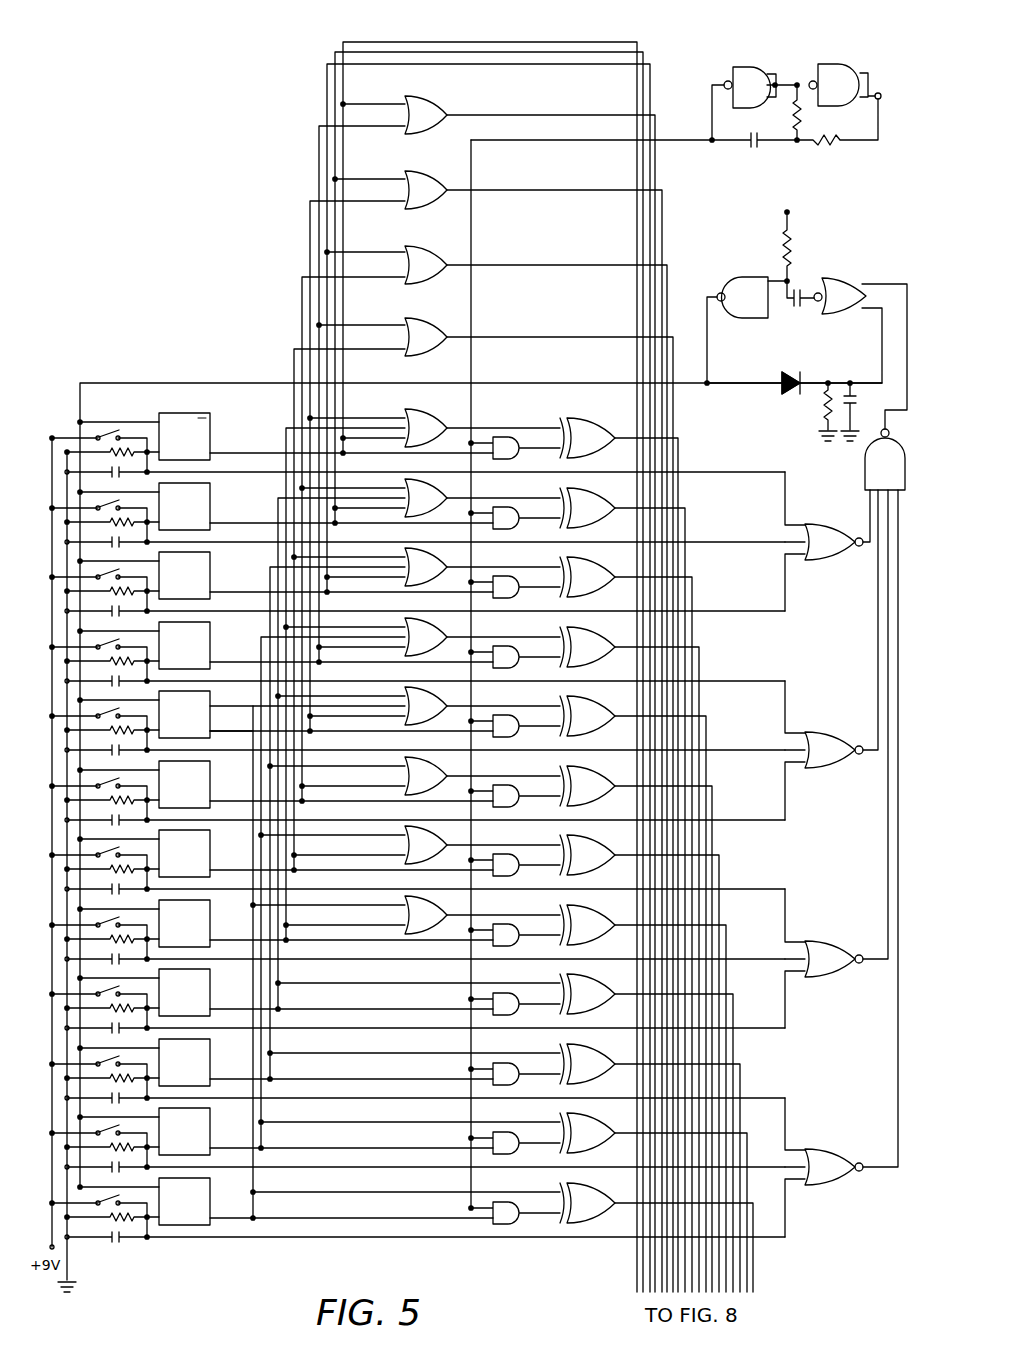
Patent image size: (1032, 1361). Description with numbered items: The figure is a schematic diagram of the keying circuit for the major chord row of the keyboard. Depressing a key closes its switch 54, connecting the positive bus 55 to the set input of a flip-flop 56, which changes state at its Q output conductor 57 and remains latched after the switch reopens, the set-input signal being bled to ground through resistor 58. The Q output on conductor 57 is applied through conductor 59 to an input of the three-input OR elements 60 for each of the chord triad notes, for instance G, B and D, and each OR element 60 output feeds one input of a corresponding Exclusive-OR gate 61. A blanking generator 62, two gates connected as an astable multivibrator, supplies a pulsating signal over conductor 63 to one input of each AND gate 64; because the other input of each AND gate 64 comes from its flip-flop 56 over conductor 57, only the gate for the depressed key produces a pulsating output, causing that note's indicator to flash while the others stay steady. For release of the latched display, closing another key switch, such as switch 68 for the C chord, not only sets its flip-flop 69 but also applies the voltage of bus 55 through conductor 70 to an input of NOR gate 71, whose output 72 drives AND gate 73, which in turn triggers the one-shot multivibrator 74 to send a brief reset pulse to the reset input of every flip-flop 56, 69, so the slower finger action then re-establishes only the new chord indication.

The switch 54 is at (178, 706).
The positive bus 55 is at (60, 428).
The flip-flop 56 is at (231, 700).
The Q output conductor 57 is at (240, 734).
The resistor 58 is at (178, 775).
The conductor 59 is at (310, 244).
The OR element 60 is at (426, 96).
The Exclusive-OR gate 61 is at (566, 422).
The blanking generator 62 is at (753, 55).
The conductor 63 is at (471, 238).
The AND gate 64 is at (516, 708).
The switch 68 is at (140, 1220).
The flip-flop 69 is at (206, 1226).
The conductor 70 is at (300, 1238).
The NOR gate 71 is at (836, 1155).
The output 72 is at (899, 1168).
The AND gate 73 is at (902, 480).
The one-shot multivibrator 74 is at (745, 265).